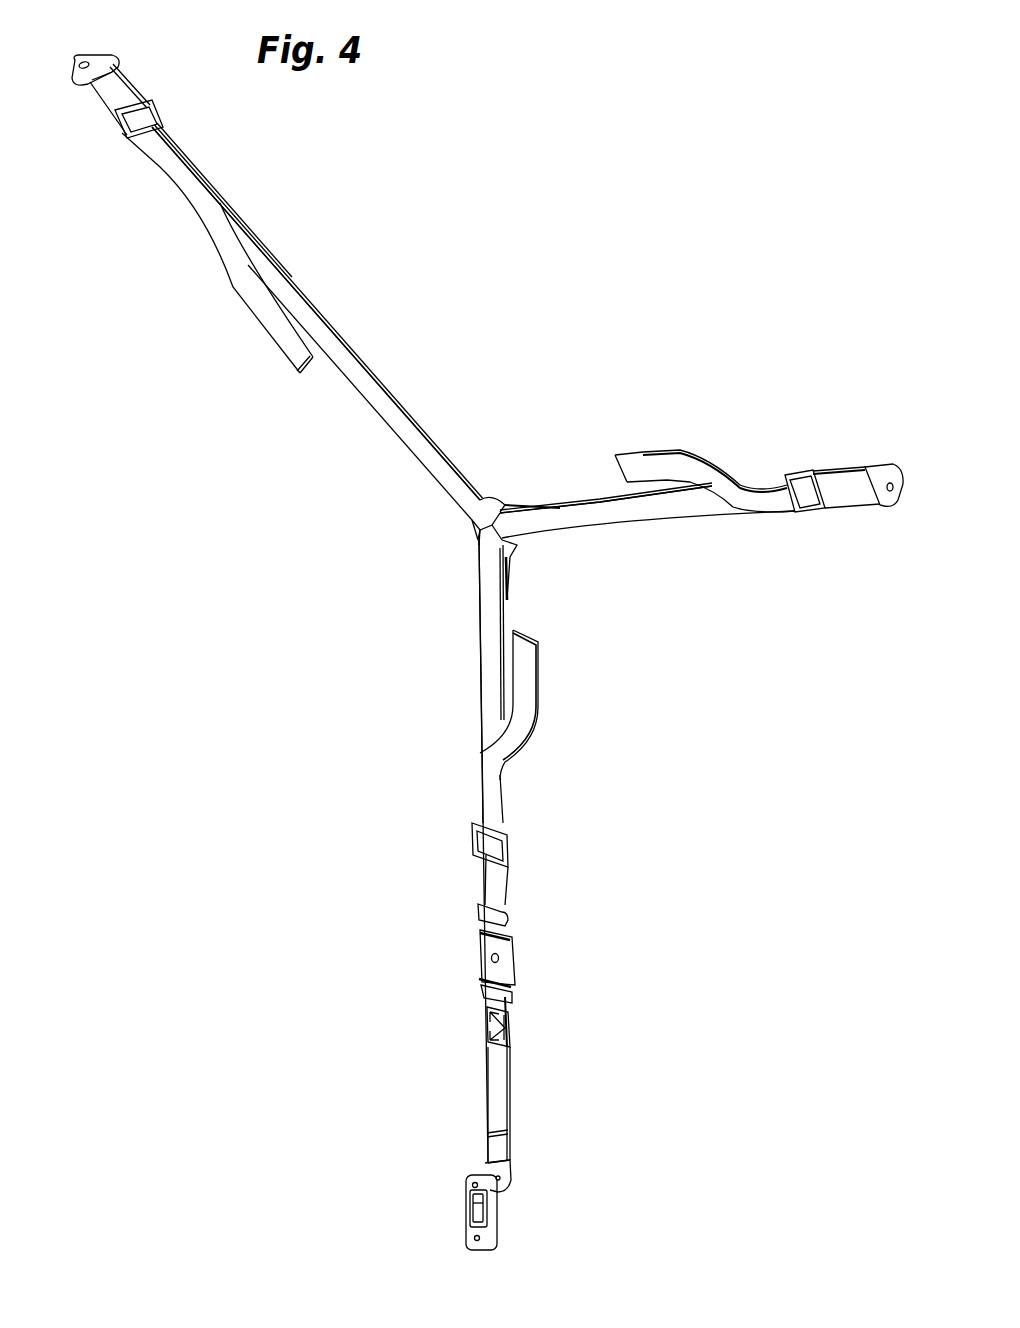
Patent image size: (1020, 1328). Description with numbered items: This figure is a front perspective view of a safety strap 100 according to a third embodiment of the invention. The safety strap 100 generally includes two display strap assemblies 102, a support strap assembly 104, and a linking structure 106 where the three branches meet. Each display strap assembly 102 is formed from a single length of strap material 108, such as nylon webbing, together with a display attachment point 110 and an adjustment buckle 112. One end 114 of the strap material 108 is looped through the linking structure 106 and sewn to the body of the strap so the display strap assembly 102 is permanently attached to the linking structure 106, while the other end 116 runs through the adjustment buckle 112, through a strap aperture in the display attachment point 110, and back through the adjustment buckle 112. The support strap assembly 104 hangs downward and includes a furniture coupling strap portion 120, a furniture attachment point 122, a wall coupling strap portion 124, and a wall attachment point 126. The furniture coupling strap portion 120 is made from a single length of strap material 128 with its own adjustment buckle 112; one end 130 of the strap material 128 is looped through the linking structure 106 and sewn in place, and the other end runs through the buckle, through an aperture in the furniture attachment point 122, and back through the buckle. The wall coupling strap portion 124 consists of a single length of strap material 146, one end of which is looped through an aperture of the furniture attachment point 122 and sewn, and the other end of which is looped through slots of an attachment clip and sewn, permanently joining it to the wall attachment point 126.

The safety strap 100 is at (583, 376).
The display strap assembly 102 is at (360, 350).
The support strap assembly 104 is at (506, 822).
The linking structure 106 is at (474, 532).
The strap material 108 is at (283, 262).
The display attachment point 110 is at (103, 60).
The adjustment buckle 112 is at (150, 115).
The end of strap material 114 is at (542, 500).
The other end of strap material 116 is at (257, 312).
The furniture coupling strap portion 120 is at (504, 795).
The furniture attachment point 122 is at (508, 960).
The wall coupling strap portion 124 is at (512, 1090).
The wall attachment point 126 is at (496, 1213).
The strap material 128 is at (480, 684).
The end of strap material 130 is at (510, 580).
The strap material 146 is at (511, 1124).